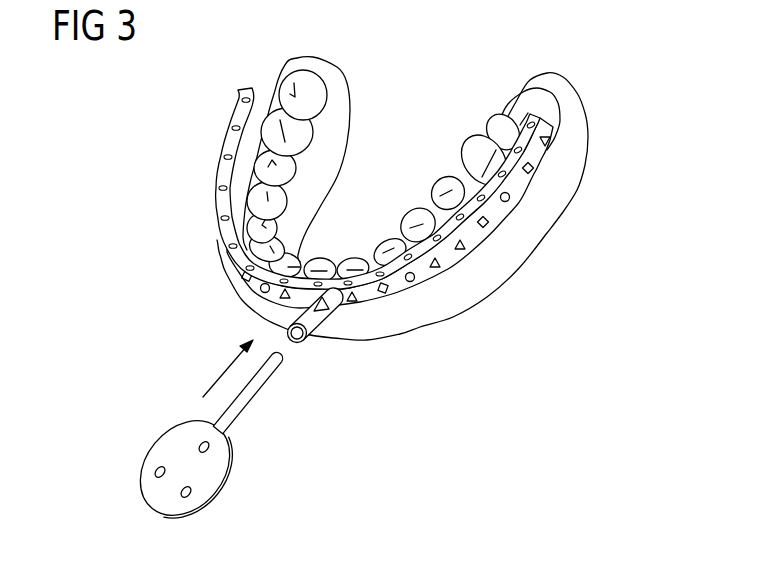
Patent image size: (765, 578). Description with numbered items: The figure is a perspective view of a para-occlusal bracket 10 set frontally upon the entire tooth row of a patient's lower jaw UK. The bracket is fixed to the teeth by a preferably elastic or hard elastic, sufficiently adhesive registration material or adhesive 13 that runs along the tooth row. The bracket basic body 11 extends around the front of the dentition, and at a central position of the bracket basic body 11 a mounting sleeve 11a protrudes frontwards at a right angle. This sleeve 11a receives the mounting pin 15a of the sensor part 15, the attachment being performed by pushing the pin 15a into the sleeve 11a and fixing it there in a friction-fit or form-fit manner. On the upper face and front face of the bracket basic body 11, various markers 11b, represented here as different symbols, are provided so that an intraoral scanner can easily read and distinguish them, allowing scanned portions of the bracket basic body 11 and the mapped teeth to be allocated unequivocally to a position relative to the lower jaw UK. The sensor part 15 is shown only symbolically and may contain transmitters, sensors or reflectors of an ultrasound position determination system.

The para-occlusal bracket 10 is at (344, 224).
The bracket basic body 11 is at (431, 213).
The mounting sleeve 11a is at (313, 322).
The markers 11b is at (552, 150).
The registration material or adhesive 13 is at (240, 112).
The sensor part 15 is at (217, 443).
The mounting pin 15a is at (254, 390).
The lower jaw UK is at (513, 243).